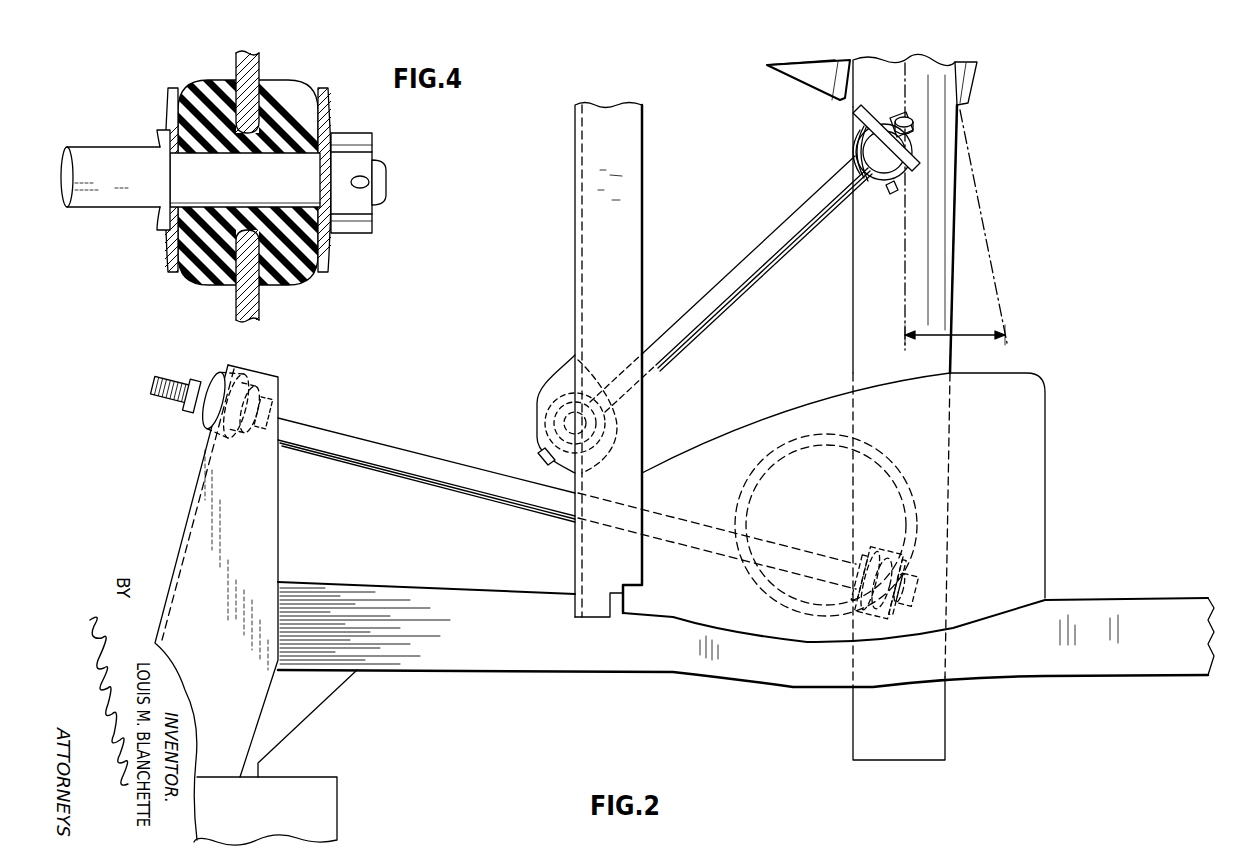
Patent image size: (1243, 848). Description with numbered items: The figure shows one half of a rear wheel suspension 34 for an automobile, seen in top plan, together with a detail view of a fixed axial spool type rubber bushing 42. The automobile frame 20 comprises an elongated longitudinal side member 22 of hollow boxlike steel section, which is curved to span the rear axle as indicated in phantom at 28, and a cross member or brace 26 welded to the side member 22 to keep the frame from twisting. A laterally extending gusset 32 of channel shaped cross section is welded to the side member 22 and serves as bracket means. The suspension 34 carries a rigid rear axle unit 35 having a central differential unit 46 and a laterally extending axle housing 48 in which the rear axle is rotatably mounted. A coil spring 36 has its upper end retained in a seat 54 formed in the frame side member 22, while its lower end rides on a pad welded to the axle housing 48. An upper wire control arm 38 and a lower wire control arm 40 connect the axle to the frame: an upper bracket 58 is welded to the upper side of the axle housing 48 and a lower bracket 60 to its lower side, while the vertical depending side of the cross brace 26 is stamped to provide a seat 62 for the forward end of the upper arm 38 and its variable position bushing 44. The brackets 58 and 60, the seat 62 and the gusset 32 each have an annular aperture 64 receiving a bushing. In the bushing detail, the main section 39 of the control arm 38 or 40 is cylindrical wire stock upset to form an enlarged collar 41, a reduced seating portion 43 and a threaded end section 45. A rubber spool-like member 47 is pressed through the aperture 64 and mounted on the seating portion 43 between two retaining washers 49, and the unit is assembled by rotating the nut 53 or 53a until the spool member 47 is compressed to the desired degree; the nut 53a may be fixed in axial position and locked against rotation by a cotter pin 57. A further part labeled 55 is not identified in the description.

In FIG. 2, the automobile frame 20 is at (395, 672).
In FIG. 2, the longitudinal frame side member 22 is at (536, 674).
In FIG. 2, the cross member or brace 26 is at (583, 243).
In FIG. 2, the curved portion of frame side member 28 is at (814, 678).
In FIG. 2, the gusset 32 is at (267, 532).
In FIG. 2, the rear wheel suspension 34 is at (764, 198).
In FIG. 2, the rear axle unit 35 is at (932, 137).
In FIG. 2, the coil spring 36 is at (806, 433).
In FIG. 4, the upper wire control arm 38 is at (94, 198).
In FIG. 2, the upper wire control arm 38 is at (723, 296).
In FIG. 4, the main section of control arm 39 is at (108, 150).
In FIG. 2, the main section of control arm 39 is at (537, 504).
In FIG. 2, the lower wire control arm 40 is at (438, 468).
In FIG. 4, the enlarged collar 41 is at (158, 136).
In FIG. 2, the enlarged collar 41 is at (861, 564).
In FIG. 4, the fixed axial spool type rubber bushing 42 is at (186, 90).
In FIG. 2, the fixed axial spool type rubber bushing 42 is at (843, 160).
In FIG. 4, the reduced cylindrical bushing seating portion 43 is at (298, 160).
In FIG. 2, the variable position axial spool type rubber bushing 44 is at (210, 376).
In FIG. 4, the threaded end section 45 is at (376, 216).
In FIG. 2, the threaded end section 45 is at (909, 126).
In FIG. 2, the central differential unit 46 is at (802, 74).
In FIG. 4, the rubber spool-like member 47 is at (206, 268).
In FIG. 2, the rubber spool-like member 47 is at (218, 383).
In FIG. 2, the axle housing 48 is at (862, 300).
In FIG. 4, the retaining washer 49 is at (166, 248).
In FIG. 2, the retaining washer 49 is at (203, 383).
In FIG. 2, the nut 53 is at (188, 418).
In FIG. 4, the nut 53a is at (346, 233).
In FIG. 2, the spring seat 54 is at (722, 455).
In FIG. 2, the bolt 55 is at (165, 406).
In FIG. 4, the cotter pin 57 is at (364, 180).
In FIG. 4, the upper bracket 58 is at (255, 303).
In FIG. 2, the upper bracket 58 is at (893, 194).
In FIG. 2, the lower bracket 60 is at (858, 632).
In FIG. 2, the upper arm seat 62 is at (540, 410).
In FIG. 4, the annular aperture 64 is at (272, 108).